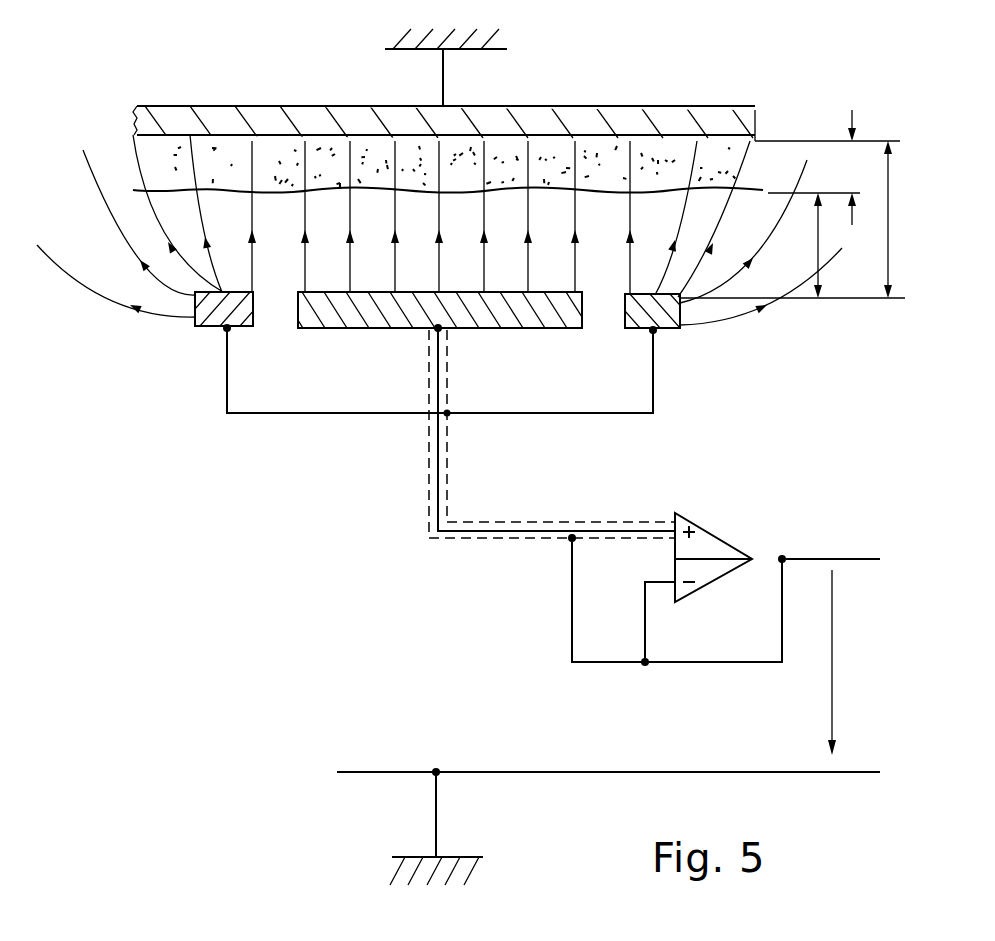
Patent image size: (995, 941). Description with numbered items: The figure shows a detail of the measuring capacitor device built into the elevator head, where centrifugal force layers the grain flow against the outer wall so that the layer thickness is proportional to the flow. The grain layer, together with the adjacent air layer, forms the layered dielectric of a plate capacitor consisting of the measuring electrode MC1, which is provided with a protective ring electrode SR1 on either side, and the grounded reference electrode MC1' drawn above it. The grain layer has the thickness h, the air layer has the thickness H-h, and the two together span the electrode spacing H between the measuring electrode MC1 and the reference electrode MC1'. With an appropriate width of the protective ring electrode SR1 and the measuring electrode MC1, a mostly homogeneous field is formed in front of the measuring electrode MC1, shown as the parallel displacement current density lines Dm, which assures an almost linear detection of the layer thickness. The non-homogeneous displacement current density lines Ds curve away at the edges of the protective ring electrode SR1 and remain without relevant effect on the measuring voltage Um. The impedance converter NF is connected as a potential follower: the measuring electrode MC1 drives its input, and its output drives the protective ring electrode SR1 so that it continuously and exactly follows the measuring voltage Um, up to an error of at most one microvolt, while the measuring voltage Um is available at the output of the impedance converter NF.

The reference electrode MC1' is at (427, 95).
The measuring electrode MC1 is at (434, 338).
The protective ring electrode SR1 is at (668, 310).
The displacement current density lines Dm is at (393, 263).
The non-homogeneous displacement current density lines Ds is at (780, 303).
The impedance converter NF is at (710, 555).
The measuring voltage Um is at (852, 662).
The grain layer thickness h is at (853, 167).
The electrode spacing H is at (886, 219).
The air layer thickness H-h is at (800, 245).